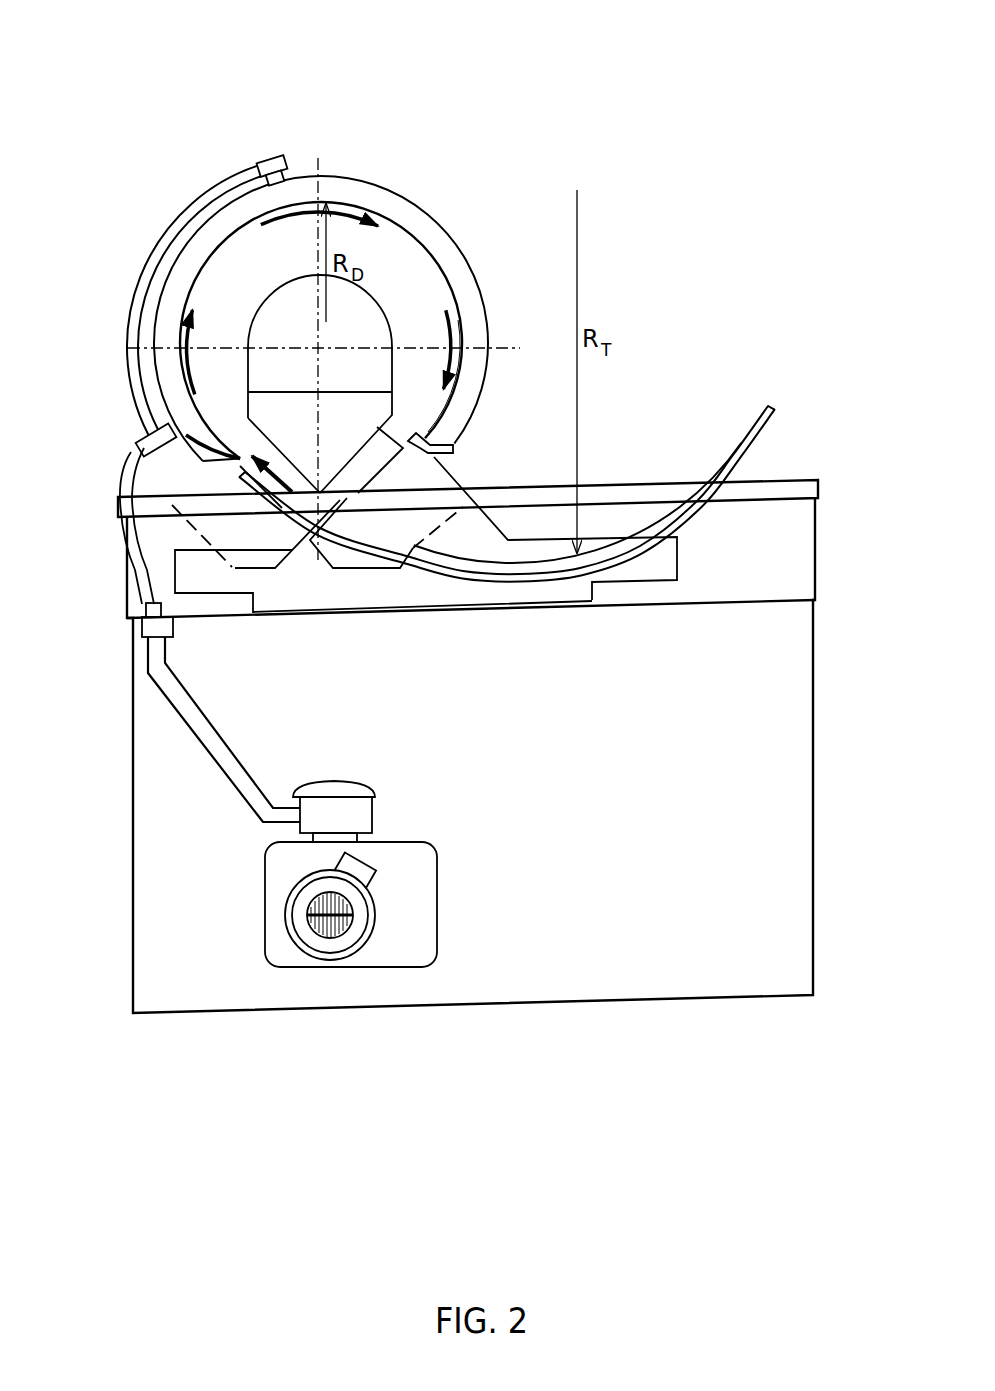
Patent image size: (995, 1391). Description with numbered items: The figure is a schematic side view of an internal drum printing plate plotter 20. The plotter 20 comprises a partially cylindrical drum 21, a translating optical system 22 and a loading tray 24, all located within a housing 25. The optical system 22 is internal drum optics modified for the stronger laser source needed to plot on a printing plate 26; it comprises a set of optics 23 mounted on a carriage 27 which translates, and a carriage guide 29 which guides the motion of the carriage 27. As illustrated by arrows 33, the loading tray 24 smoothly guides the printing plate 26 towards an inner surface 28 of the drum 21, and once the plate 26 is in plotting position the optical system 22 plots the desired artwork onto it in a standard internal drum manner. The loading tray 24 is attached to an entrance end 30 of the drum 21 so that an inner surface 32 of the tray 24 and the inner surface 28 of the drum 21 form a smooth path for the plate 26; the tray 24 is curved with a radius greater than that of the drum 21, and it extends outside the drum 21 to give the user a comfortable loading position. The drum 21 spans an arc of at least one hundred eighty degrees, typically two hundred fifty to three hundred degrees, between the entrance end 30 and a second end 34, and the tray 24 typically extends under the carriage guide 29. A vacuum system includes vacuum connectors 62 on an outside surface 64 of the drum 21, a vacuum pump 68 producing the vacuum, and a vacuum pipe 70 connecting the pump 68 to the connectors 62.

The plotter 20 is at (316, 85).
The drum 21 is at (403, 213).
The translating optical system 22 is at (388, 290).
The set of optics 23 is at (373, 357).
The loading tray 24 is at (731, 455).
The housing 25 is at (773, 613).
The printing plate 26 is at (680, 513).
The carriage 27 is at (375, 395).
The inner surface of drum 28 is at (405, 252).
The carriage guide 29 is at (385, 446).
The entrance end 30 is at (263, 433).
The inner surface of tray 32 is at (537, 568).
The arrows 33 is at (257, 466).
The second end 34 is at (440, 458).
The vacuum connectors 62 is at (272, 160).
The outside surface of drum 64 is at (372, 182).
The vacuum pump 68 is at (407, 860).
The vacuum pipe 70 is at (205, 750).